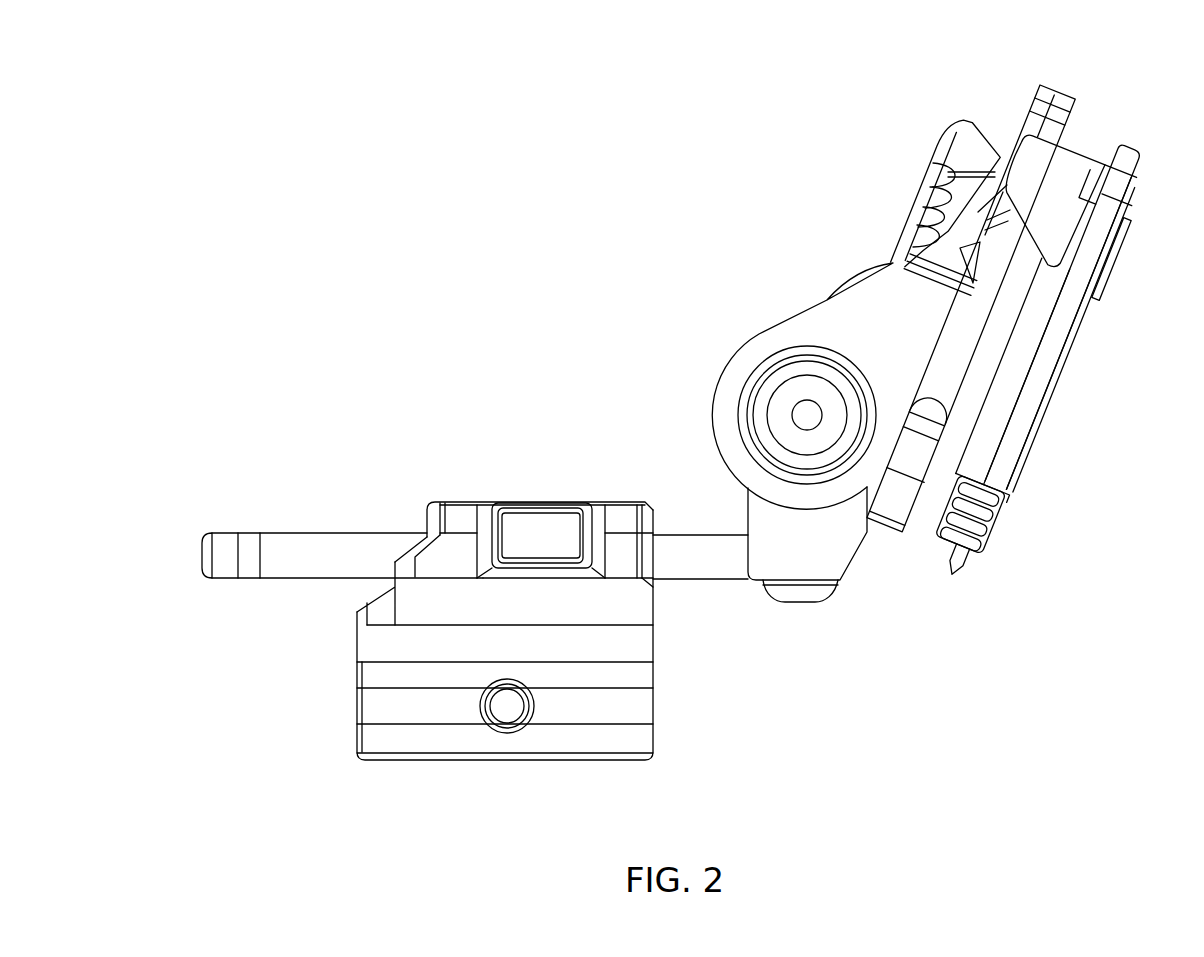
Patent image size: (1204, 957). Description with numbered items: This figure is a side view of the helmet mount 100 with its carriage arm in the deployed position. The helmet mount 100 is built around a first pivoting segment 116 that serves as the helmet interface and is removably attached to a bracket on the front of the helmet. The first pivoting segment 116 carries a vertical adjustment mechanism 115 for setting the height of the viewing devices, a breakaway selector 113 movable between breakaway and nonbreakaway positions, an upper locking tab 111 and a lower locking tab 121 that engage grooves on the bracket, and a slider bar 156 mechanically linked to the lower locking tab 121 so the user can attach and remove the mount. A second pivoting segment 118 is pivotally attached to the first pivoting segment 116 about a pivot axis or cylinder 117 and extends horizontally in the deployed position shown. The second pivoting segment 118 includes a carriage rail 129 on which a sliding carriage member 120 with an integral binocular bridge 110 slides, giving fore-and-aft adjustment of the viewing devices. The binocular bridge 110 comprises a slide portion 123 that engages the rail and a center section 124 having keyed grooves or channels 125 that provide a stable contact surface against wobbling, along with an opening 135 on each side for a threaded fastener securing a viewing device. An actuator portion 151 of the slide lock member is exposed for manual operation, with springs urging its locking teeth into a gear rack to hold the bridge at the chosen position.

The helmet mount 100 is at (388, 117).
The integral binocular bridge 110 is at (684, 675).
The upper locking tab 111 is at (1138, 150).
The breakaway selector 113 is at (1050, 178).
The vertical adjustment mechanism 115 is at (935, 150).
The first pivoting segment 116 is at (826, 264).
The pivot axis or cylinder 117 is at (807, 420).
The second pivoting segment 118 is at (199, 592).
The sliding carriage member 120 is at (596, 496).
The lower locking tab 121 is at (968, 573).
The slide portion 123 is at (621, 560).
The center section 124 is at (348, 700).
The grooves or channels 125 is at (384, 708).
The carriage rail 129 is at (350, 555).
The opening 135 is at (513, 723).
The actuator portion 151 is at (540, 540).
The slider bar 156 is at (985, 525).